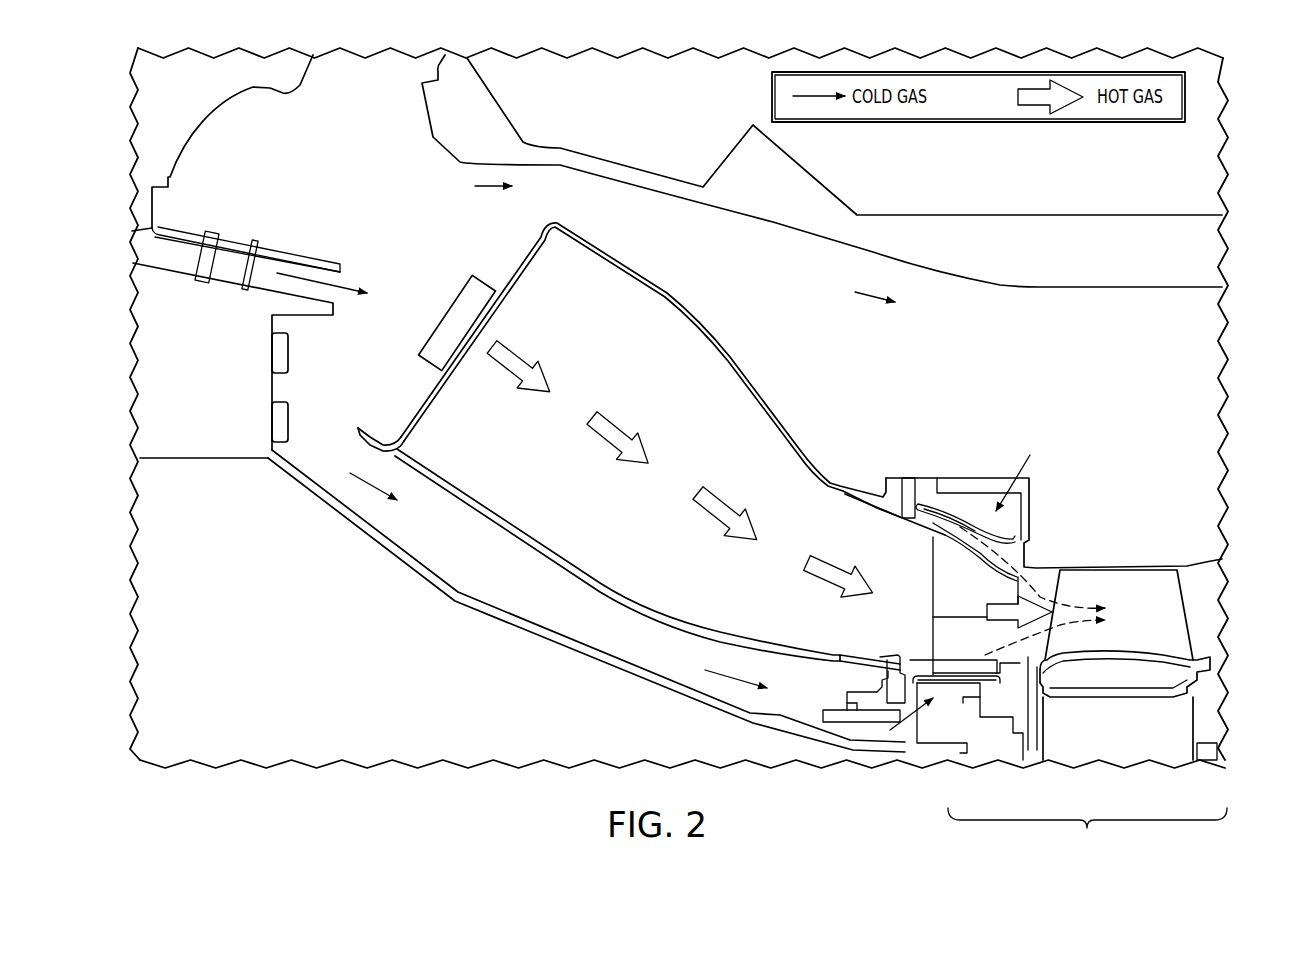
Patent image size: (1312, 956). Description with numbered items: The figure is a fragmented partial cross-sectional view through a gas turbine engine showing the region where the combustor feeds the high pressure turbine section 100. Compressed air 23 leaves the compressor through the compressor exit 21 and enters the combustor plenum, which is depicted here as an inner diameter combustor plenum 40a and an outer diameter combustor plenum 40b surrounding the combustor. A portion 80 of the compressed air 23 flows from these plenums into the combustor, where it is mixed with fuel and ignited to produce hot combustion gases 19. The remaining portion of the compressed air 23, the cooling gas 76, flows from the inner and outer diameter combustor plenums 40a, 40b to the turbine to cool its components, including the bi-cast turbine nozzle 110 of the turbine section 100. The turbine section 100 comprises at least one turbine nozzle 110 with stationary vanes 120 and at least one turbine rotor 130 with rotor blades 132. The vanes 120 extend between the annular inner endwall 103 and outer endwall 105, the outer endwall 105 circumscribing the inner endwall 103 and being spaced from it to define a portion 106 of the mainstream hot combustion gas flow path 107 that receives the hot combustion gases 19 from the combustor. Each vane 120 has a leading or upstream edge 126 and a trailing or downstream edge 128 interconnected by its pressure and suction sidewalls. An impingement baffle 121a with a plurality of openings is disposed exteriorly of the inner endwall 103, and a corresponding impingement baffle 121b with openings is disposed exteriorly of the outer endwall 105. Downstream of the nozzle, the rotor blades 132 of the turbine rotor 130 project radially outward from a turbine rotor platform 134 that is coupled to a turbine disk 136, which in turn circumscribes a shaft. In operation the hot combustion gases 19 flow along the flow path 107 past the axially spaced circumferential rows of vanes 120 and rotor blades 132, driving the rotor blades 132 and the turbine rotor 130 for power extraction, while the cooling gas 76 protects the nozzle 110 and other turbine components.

The hot combustion gases 19 is at (527, 352).
The compressor exit 21 is at (328, 258).
The compressed air 23 is at (482, 185).
The inner diameter combustor plenum 40a is at (467, 564).
The outer diameter combustor plenum 40b is at (737, 298).
The cooling gas 76 is at (863, 296).
The portion of the compressed air 80 is at (657, 327).
The turbine section 100 is at (1087, 836).
The inner endwall 103 is at (962, 657).
The outer endwall 105 is at (967, 552).
The portion of the combustion gas flow path 106 is at (1013, 640).
The mainstream hot combustion gas flow path 107 is at (617, 521).
The bi-cast turbine nozzle 110 is at (930, 616).
The vanes 120 is at (978, 605).
The impingement baffle 121a is at (950, 686).
The impingement baffle 121b is at (950, 493).
The leading edge 126 is at (932, 553).
The trailing edge 128 is at (1030, 590).
The turbine rotor 130 is at (1192, 618).
The rotor blades 132 is at (1225, 559).
The turbine rotor platform 134 is at (1210, 655).
The turbine disk 136 is at (1140, 750).